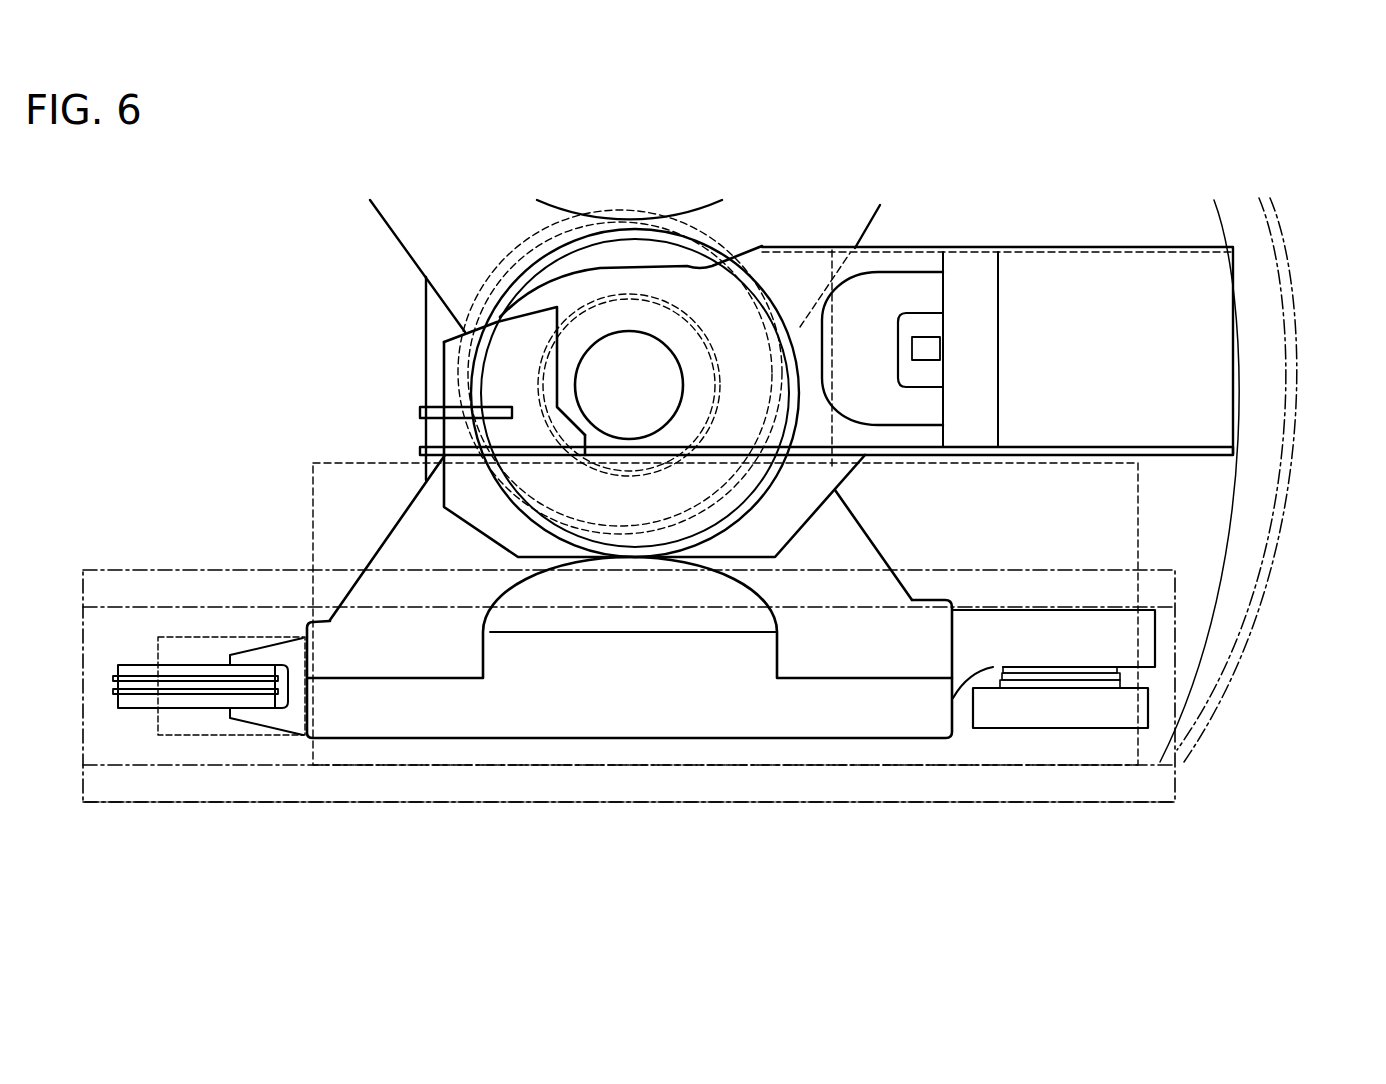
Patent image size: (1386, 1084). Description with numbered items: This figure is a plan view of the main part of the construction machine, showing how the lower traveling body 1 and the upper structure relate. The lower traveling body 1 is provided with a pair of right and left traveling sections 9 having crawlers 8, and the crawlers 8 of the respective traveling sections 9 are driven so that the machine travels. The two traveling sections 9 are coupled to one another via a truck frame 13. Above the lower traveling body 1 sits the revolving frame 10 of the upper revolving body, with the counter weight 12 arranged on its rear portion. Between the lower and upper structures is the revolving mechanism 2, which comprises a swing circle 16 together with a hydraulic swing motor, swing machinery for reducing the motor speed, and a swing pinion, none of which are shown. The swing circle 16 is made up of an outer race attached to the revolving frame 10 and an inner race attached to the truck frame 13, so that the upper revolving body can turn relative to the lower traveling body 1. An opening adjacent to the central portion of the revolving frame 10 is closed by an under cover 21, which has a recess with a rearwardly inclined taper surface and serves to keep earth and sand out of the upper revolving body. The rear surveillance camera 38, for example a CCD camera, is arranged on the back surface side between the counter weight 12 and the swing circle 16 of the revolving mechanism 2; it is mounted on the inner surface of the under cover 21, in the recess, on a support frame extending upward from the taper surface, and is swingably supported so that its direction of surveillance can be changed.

The lower traveling body 1 is at (207, 557).
The revolving mechanism 2 is at (692, 242).
The crawler 8 is at (822, 802).
The traveling section 9 is at (962, 808).
The revolving frame 10 is at (1167, 242).
The counter weight 12 is at (1270, 384).
The truck frame 13 is at (863, 550).
The swing circle 16 is at (725, 263).
The under cover 21 is at (932, 296).
The rear surveillance camera 38 is at (937, 348).